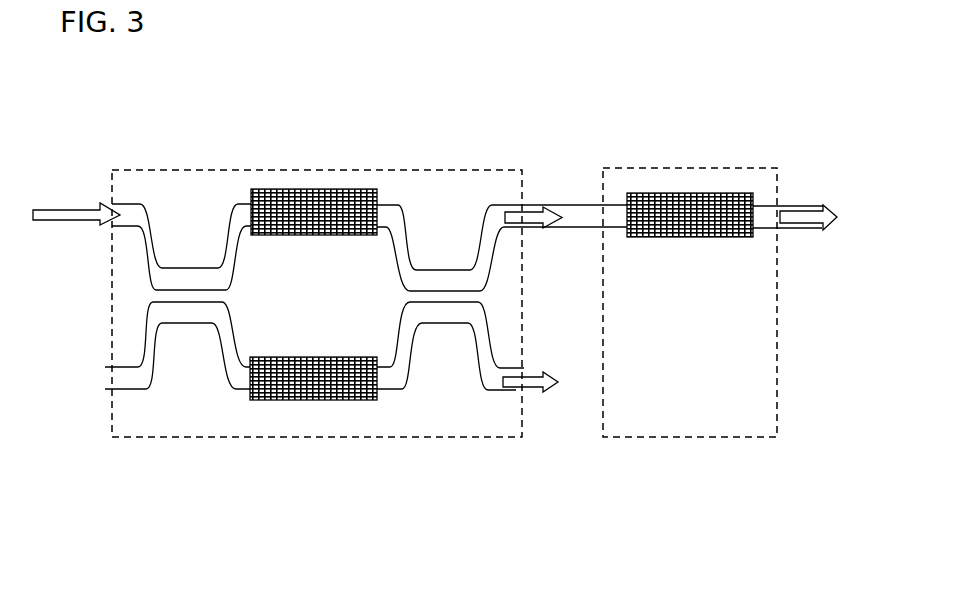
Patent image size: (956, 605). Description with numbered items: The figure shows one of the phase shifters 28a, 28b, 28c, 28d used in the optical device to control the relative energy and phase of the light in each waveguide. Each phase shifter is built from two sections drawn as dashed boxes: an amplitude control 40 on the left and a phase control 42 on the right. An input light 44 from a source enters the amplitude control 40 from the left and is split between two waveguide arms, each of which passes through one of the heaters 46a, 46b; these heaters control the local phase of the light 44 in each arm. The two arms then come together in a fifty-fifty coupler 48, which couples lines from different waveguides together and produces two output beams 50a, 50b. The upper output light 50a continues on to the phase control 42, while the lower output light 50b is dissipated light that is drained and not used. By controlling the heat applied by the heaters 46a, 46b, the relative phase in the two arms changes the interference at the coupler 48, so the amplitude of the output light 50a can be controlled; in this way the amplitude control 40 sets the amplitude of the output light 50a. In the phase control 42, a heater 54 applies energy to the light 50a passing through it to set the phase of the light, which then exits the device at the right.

The phase shifter 28a is at (448, 170).
The phase shifter 28b is at (434, 286).
The phase shifter 28c is at (434, 286).
The phase shifter 28d is at (434, 286).
The amplitude control 40 is at (160, 170).
The phase control 42 is at (717, 168).
The input light 44 is at (56, 209).
The heater 46a is at (300, 190).
The heater 46b is at (325, 357).
The 50-50 coupler 48 is at (449, 349).
The output light 50a is at (540, 209).
The output light 50b is at (540, 372).
The heater 54 is at (731, 194).